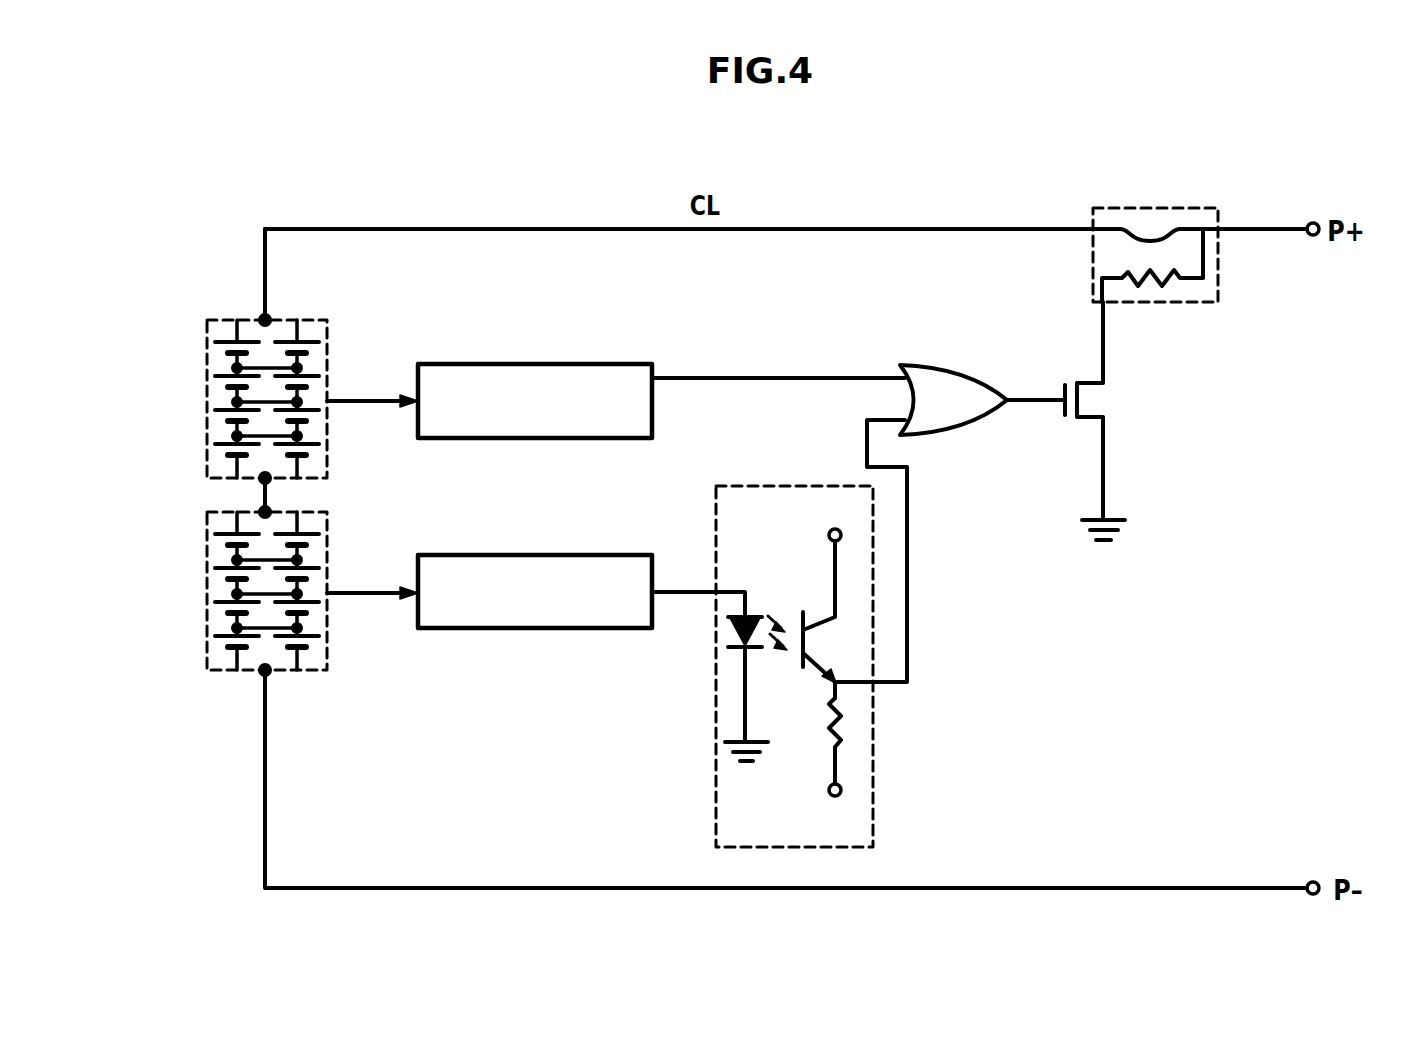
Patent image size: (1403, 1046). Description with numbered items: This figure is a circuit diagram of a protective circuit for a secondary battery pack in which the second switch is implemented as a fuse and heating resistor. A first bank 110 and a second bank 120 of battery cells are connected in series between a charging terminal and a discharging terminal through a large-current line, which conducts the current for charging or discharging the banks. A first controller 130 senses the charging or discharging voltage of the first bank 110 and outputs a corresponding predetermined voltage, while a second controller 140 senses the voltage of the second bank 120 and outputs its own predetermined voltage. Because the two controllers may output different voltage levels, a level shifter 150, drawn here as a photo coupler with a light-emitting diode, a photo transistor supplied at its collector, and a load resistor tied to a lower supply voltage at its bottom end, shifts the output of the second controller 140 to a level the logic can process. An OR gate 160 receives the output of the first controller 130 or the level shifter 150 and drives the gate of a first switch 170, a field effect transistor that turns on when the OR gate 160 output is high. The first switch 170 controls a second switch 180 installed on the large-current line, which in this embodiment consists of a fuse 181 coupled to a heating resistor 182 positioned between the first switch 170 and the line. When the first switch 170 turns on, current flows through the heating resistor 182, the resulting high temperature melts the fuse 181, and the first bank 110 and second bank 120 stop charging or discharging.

The first bank 110 is at (233, 320).
The second bank 120 is at (233, 512).
The first controller 130 is at (534, 364).
The second controller 140 is at (535, 628).
The level shifter 150 is at (873, 762).
The OR gate 160 is at (947, 362).
The first switch 170 is at (1113, 390).
The second switch 180 is at (1177, 211).
The fuse 181 is at (1132, 219).
The heating resistor 182 is at (1190, 279).